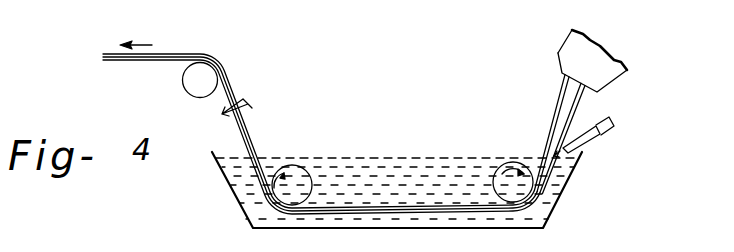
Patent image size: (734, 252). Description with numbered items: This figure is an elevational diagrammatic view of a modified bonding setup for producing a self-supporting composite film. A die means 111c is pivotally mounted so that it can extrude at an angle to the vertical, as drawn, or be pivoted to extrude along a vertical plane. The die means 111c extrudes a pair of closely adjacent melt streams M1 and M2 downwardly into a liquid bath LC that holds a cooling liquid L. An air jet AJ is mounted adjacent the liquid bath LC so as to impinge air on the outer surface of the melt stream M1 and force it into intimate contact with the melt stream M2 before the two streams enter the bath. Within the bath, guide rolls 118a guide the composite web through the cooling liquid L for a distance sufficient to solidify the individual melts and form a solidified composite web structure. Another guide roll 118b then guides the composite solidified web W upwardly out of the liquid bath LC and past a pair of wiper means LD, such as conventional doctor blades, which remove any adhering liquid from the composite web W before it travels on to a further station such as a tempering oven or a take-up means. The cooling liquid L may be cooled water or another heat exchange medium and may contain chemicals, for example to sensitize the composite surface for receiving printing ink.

The guide rolls 118a is at (295, 175).
The guide roll 118b is at (192, 87).
The die means 111c is at (627, 70).
The composite solidified web W is at (390, 202).
The cooling liquid L is at (383, 167).
The liquid bath LC is at (559, 198).
The wiper means LD is at (252, 107).
The melt stream M1 is at (582, 104).
The melt stream M2 is at (559, 107).
The air jet AJ is at (598, 131).